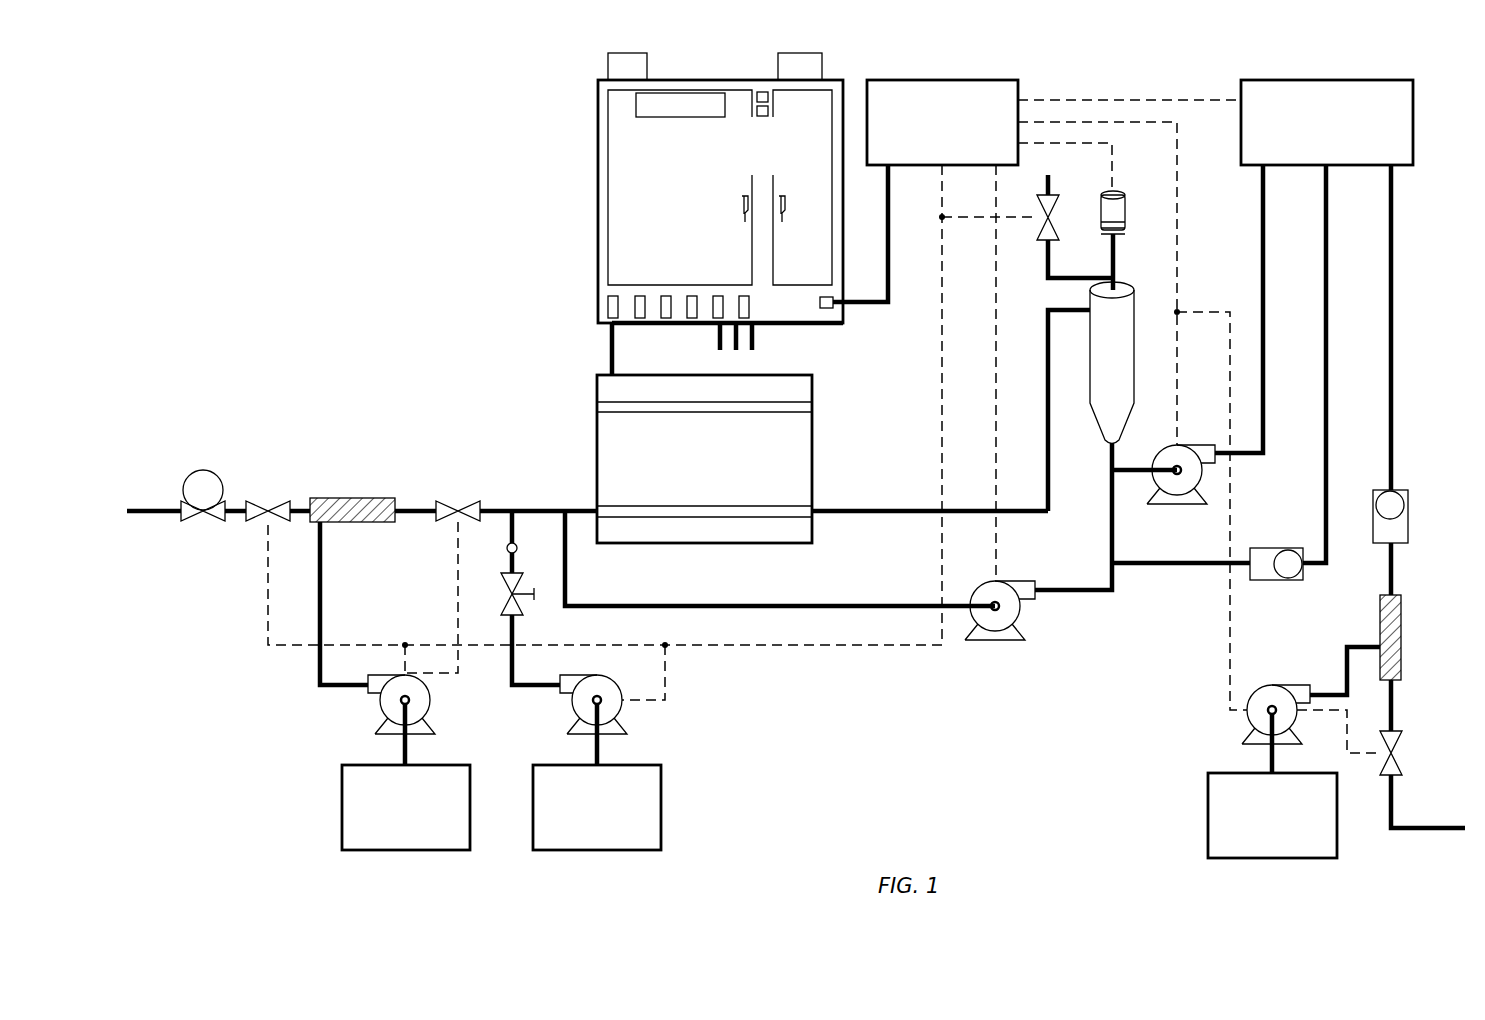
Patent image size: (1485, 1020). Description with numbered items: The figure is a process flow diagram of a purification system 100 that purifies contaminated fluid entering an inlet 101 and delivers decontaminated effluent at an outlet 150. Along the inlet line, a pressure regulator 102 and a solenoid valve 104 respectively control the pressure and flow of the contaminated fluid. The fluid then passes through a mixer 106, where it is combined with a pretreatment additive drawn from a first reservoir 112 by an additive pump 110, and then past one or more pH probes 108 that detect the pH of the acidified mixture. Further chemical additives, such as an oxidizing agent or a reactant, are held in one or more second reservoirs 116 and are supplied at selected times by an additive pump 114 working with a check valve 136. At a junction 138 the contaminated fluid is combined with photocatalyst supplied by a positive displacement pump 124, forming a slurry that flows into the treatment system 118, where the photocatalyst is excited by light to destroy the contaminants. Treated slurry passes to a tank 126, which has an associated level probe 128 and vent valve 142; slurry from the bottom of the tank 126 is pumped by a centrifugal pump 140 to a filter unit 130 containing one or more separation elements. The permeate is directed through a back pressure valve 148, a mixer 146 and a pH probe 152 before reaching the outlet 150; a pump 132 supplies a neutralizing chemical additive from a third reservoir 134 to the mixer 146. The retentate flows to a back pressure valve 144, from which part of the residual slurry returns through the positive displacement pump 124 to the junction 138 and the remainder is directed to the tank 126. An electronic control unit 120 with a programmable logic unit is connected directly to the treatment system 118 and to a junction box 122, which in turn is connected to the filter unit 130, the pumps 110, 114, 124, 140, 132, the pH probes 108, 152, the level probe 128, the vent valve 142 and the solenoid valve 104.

The purification system 100 is at (337, 126).
The inlet 101 is at (170, 515).
The pressure regulator 102 is at (203, 470).
The solenoid valve 104 is at (266, 500).
The mixer 106 is at (347, 497).
The pH probes 108 is at (460, 500).
The additive pump 110 is at (380, 705).
The first reservoir 112 is at (342, 836).
The additive pump 114 is at (572, 705).
The second reservoir 116 is at (661, 836).
The treatment system 118 is at (597, 442).
The electronic control unit 120 is at (598, 205).
The junction box 122 is at (963, 66).
The positive displacement pump 124 is at (995, 641).
The tank 126 is at (1135, 300).
The level probe 128 is at (1118, 205).
The filter unit 130 is at (1350, 66).
The pump 132 is at (1275, 685).
The third reservoir 134 is at (1208, 848).
The check valve 136 is at (524, 607).
The junction 138 is at (567, 508).
The centrifugal pump 140 is at (1182, 505).
The vent valve 142 is at (1052, 207).
The back pressure valve 144 is at (1290, 580).
The mixer 146 is at (1403, 636).
The back pressure valve 148 is at (1410, 515).
The outlet 150 is at (1425, 832).
The pH probe 152 is at (1400, 745).